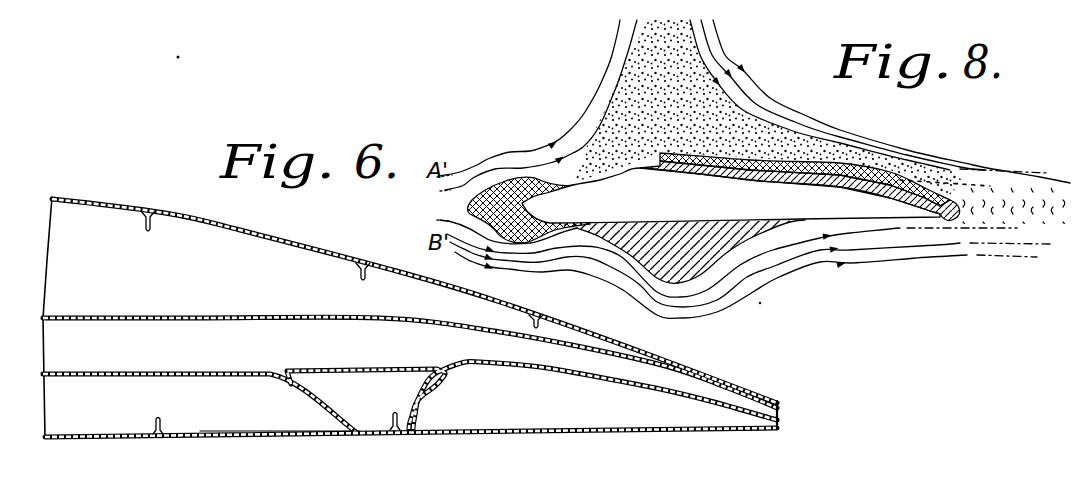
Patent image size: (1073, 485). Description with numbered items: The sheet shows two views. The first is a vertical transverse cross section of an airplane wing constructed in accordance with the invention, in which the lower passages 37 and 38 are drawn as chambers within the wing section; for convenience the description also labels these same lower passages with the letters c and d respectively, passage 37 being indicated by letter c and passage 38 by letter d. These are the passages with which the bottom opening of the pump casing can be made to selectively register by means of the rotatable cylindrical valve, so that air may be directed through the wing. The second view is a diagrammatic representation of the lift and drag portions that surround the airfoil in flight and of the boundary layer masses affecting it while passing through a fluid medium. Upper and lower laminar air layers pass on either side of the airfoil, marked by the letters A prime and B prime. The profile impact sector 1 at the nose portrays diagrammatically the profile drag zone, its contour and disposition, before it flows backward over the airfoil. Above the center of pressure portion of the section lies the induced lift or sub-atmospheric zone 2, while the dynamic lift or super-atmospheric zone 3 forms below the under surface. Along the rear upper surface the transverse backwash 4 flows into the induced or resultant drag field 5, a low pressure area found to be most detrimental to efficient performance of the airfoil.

In FIG. 6, the passage 37 is at (406, 365).
In FIG. 6, the passage 38 is at (197, 405).
In FIG. 6, the lower passage designation c is at (788, 415).
In FIG. 6, the lower passage designation d is at (262, 438).
In FIG. 8, the profile impact sector 1 is at (506, 184).
In FIG. 8, the induced lift or sub-atmospheric zone 2 is at (637, 94).
In FIG. 8, the dynamic lift or super-atmospheric zone 3 is at (703, 272).
In FIG. 8, the transverse backwash 4 is at (783, 157).
In FIG. 8, the induced or resultant drag field 5 is at (1031, 223).